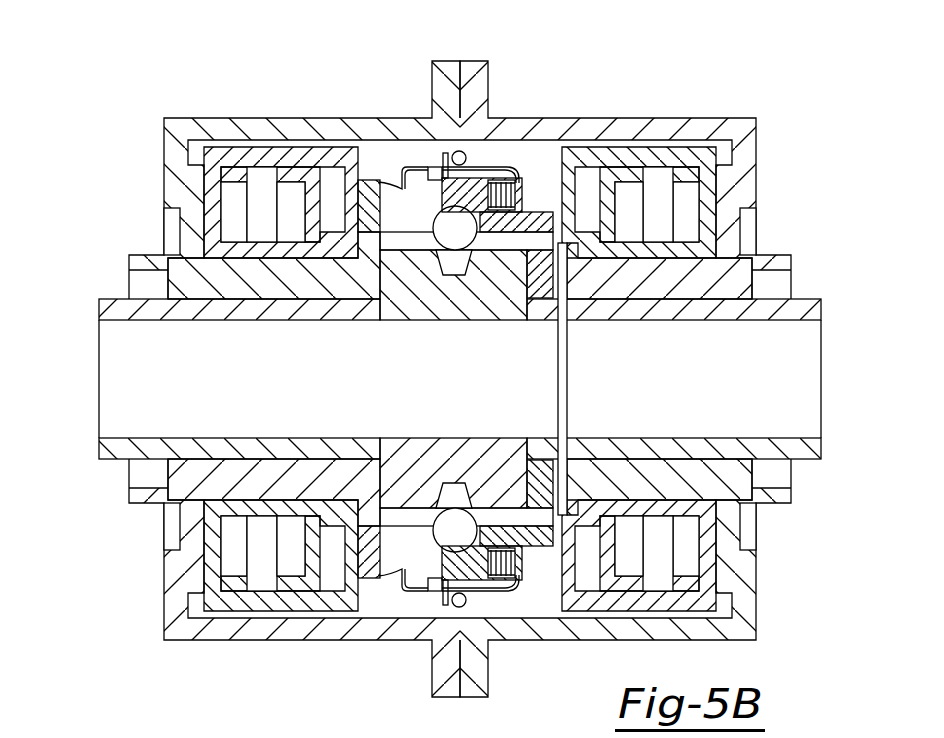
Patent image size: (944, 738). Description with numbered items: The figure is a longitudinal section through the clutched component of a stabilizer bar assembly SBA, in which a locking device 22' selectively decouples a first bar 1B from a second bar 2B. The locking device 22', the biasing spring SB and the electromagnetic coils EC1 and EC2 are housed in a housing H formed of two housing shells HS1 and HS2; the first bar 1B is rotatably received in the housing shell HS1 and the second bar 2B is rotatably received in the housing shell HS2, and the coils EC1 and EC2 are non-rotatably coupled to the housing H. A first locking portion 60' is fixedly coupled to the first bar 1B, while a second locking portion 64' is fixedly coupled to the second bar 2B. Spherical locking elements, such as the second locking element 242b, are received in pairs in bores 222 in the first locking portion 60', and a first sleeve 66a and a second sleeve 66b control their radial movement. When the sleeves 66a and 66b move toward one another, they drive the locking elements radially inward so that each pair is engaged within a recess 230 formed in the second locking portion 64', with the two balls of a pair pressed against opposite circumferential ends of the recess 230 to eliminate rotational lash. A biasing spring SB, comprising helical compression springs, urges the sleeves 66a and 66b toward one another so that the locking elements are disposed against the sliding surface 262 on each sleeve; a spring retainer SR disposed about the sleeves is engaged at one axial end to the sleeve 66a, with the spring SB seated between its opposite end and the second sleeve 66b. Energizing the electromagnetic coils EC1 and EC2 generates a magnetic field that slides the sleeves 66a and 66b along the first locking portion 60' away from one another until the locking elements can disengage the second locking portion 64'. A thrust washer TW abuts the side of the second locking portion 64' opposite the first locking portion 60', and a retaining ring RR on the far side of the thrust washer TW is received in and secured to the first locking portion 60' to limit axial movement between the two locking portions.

The stabilizer bar assembly SBA is at (460, 358).
The housing H is at (460, 364).
The housing shell HS1 is at (442, 70).
The housing shell HS2 is at (472, 99).
The electromagnetic coil EC1 is at (236, 203).
The electromagnetic coil EC2 is at (686, 191).
The first bar 1B is at (131, 310).
The second bar 2B is at (780, 312).
The second locking portion 64' is at (453, 379).
The first locking portion 60' is at (466, 312).
The bore 222 is at (413, 515).
The recess 230 is at (452, 493).
The second locking element 242b is at (457, 232).
The retaining ring RR is at (540, 474).
The thrust washer TW is at (560, 380).
The locking device 22' is at (427, 372).
The second sleeve 66b is at (550, 222).
The sliding surface 262 is at (543, 521).
The biasing spring SB is at (498, 183).
The first sleeve 66a is at (372, 205).
The spring retainer SR is at (403, 586).